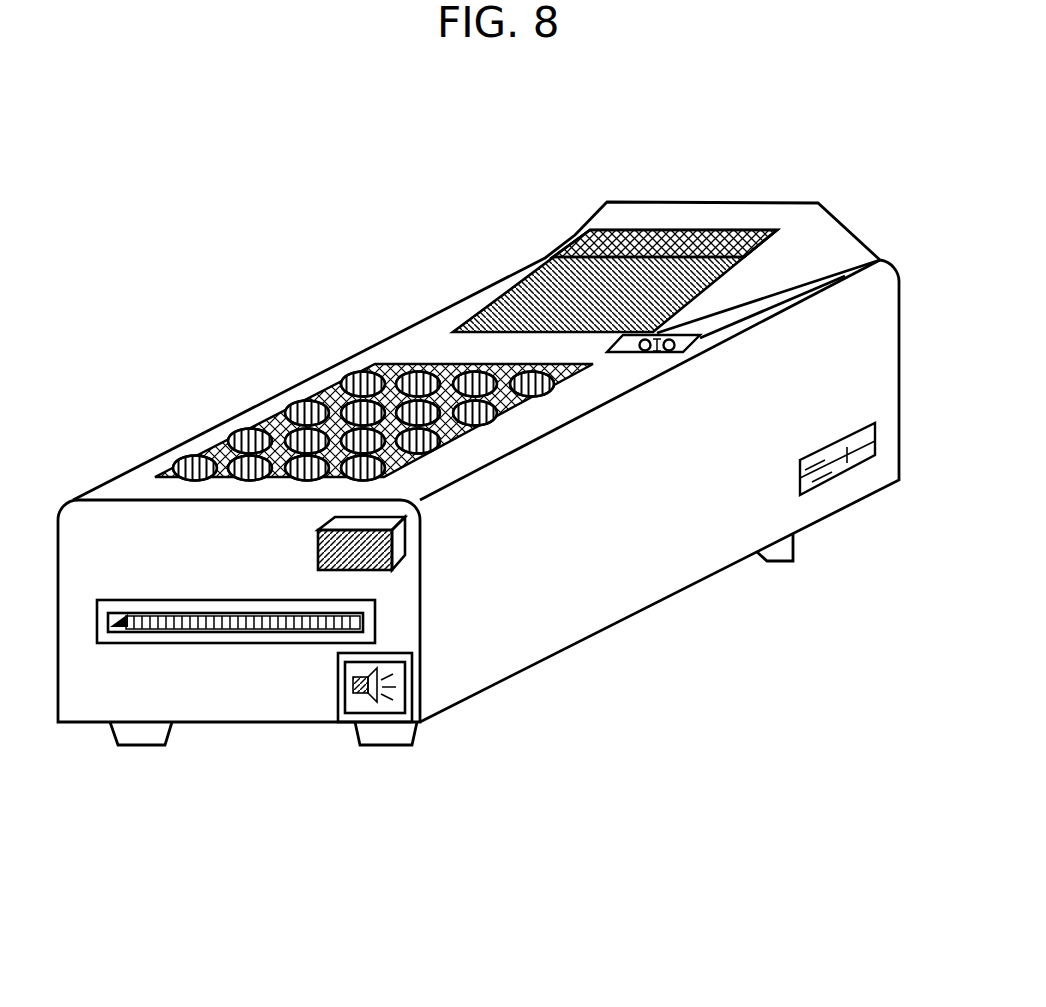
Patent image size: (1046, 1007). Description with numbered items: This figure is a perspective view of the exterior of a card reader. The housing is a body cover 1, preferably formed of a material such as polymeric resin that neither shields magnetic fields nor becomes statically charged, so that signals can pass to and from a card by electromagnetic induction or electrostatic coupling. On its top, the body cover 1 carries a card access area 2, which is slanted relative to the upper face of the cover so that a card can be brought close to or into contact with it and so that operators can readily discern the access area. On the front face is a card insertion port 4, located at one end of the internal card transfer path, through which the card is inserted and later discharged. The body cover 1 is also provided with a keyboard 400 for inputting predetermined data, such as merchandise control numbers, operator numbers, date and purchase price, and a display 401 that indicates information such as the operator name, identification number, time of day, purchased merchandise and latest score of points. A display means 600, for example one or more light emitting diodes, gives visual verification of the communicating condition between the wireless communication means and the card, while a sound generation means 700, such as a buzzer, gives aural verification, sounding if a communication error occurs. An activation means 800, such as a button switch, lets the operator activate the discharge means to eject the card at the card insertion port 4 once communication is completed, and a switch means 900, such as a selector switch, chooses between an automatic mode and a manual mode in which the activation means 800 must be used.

The body cover 1 is at (623, 598).
The card access area 2 is at (598, 223).
The card insertion port 4 is at (200, 628).
The keyboard 400 is at (320, 395).
The display 401 is at (662, 243).
The display means 600 is at (640, 345).
The sound generation means 700 is at (398, 693).
The activation means 800 is at (378, 568).
The switch means 900 is at (832, 473).